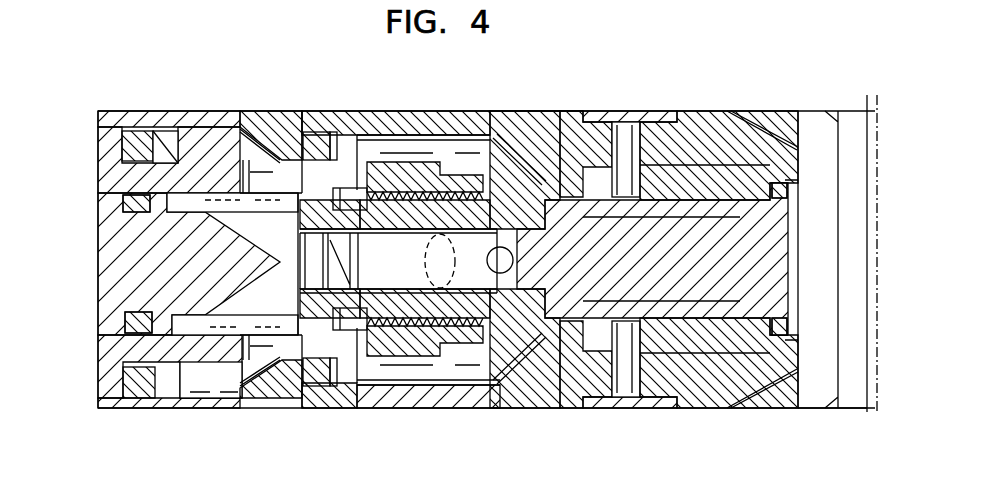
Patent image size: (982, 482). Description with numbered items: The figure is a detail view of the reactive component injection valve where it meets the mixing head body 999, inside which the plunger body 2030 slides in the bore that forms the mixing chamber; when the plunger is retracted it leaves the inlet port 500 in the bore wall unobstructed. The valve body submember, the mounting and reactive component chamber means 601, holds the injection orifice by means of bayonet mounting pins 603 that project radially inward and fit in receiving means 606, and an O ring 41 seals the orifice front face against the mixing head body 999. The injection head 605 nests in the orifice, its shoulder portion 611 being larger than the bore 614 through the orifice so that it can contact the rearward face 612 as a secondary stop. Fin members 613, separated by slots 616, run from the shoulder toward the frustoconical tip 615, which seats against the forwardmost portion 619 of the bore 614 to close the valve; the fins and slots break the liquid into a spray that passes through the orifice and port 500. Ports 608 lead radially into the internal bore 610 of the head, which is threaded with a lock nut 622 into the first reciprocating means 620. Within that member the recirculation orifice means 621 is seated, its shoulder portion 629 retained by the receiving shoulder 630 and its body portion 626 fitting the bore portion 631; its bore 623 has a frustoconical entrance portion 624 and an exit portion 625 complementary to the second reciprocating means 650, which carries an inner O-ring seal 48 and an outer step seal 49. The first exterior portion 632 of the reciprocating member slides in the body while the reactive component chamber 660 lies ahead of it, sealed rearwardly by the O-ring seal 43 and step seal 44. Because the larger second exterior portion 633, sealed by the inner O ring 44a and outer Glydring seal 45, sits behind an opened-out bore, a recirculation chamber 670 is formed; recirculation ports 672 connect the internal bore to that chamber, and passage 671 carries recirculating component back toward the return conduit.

The second exterior portion 633 is at (113, 110).
The outer Glydring seal 45 is at (132, 130).
The first reciprocating means 620 is at (196, 160).
The reactive component recirculation chamber 670 is at (220, 137).
The step seal 44 is at (310, 137).
The O-ring seal 43 is at (323, 133).
The body portion 626 is at (277, 157).
The receiving shoulder 630 is at (342, 157).
The first exterior portion 632 is at (405, 110).
The recirculation orifice means 621 is at (392, 138).
The reactive component chamber 660 is at (490, 110).
The mounting and reactive component chamber means 601 is at (523, 110).
The shoulder portion 611 is at (553, 110).
The bayonet mounting pins 603 is at (653, 110).
The forwardmost portion of bore 619 is at (758, 110).
The plunger body 2030 is at (850, 123).
The receiving means 606 is at (613, 183).
The fin members 613 is at (713, 167).
The inlet port 500 is at (810, 237).
The second reciprocating means 650 is at (190, 260).
The recirculation ports 672 is at (247, 317).
The inner O-ring seal 48 is at (133, 317).
The internal bore 610 is at (423, 277).
The bore 623 is at (373, 233).
The ports 608 is at (513, 257).
The injection head 605 is at (707, 277).
The tip 615 is at (787, 303).
The O ring 41 is at (787, 340).
The inner O ring 44a is at (133, 400).
The outer step seal 49 is at (168, 400).
The passage 671 is at (225, 414).
The exit portion 625 is at (267, 400).
The portion of bore 631 is at (295, 400).
The shoulder portion 629 is at (337, 392).
The entrance portion 624 is at (395, 393).
The lock nut 622 is at (473, 380).
The rearward face 612 is at (572, 387).
The bore 614 is at (692, 387).
The slots 616 is at (738, 390).
The mixing head body 999 is at (783, 392).